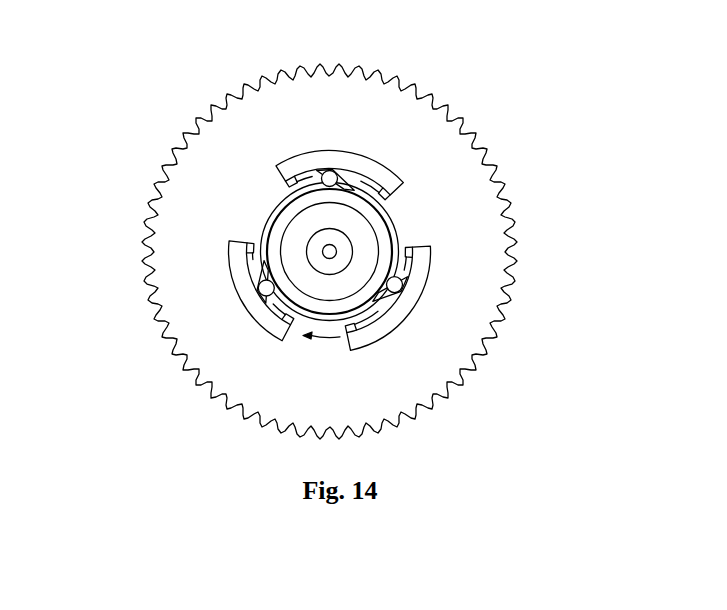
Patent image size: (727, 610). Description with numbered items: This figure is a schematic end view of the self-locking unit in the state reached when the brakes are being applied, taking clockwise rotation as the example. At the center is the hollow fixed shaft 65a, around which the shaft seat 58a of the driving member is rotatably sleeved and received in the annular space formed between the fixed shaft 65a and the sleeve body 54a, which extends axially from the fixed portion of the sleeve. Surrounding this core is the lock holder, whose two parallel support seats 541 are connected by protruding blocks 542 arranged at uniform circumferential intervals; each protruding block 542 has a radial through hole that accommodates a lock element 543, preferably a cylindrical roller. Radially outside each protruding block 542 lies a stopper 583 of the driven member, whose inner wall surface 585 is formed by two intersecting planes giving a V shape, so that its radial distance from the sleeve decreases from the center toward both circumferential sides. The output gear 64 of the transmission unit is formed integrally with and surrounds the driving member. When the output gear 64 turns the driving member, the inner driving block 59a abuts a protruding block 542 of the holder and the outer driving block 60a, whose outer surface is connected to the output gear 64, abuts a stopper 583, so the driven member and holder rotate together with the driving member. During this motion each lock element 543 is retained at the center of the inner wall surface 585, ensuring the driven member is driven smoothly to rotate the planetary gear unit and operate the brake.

The output gear 64 is at (185, 257).
The fixed shaft 65a is at (343, 240).
The shaft seat 58a is at (363, 230).
The stopper 583 is at (363, 165).
The outer driving block 60a is at (263, 187).
The protruding block 542 is at (300, 183).
The lock element 543 is at (332, 170).
The inner wall surface 585 is at (328, 171).
The sleeve body 54a is at (383, 197).
The support seat 541 is at (258, 207).
The inner driving block 59a is at (240, 227).